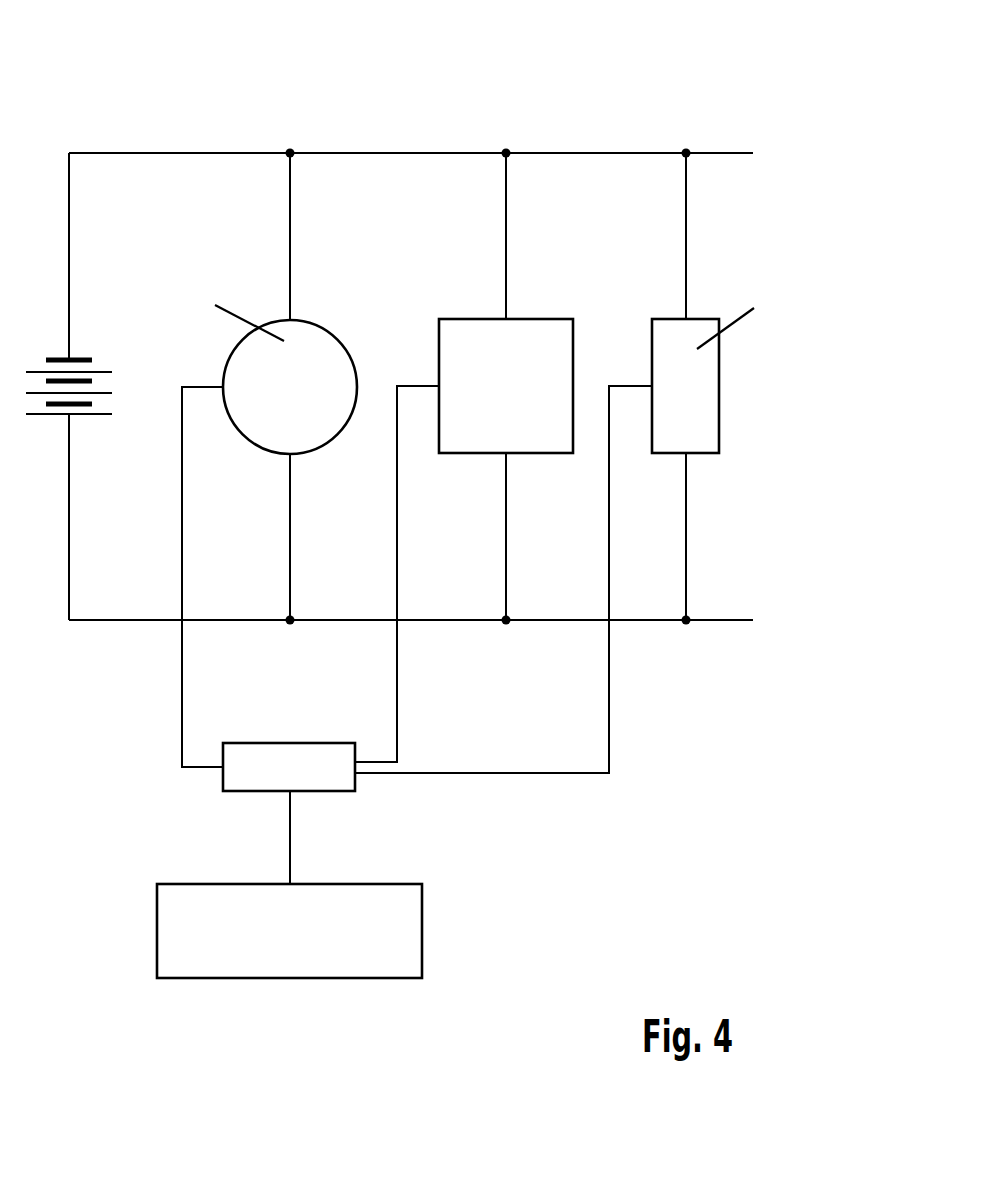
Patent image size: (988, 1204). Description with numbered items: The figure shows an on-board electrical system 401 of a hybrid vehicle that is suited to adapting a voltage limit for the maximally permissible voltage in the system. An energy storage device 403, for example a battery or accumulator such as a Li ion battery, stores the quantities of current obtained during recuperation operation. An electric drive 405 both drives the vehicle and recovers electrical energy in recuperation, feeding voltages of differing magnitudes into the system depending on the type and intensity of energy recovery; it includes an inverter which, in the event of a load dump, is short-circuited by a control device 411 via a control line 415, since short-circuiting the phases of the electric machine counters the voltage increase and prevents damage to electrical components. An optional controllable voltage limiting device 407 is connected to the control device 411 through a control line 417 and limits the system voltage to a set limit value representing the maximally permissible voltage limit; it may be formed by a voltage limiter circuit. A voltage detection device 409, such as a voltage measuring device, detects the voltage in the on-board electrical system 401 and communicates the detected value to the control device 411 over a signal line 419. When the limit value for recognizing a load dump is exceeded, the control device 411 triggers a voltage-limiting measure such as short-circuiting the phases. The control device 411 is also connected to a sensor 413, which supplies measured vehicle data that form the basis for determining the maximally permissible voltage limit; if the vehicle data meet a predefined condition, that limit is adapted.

The on-board electrical system 401 is at (86, 56).
The energy storage device 403 is at (100, 371).
The electric drive 405 is at (321, 325).
The controllable voltage limiting device 407 is at (459, 318).
The voltage detection device 409 is at (720, 386).
The control device 411 is at (248, 793).
The sensor 413 is at (423, 930).
The control line 415 is at (182, 677).
The control line 417 is at (397, 672).
The signal line 419 is at (609, 672).